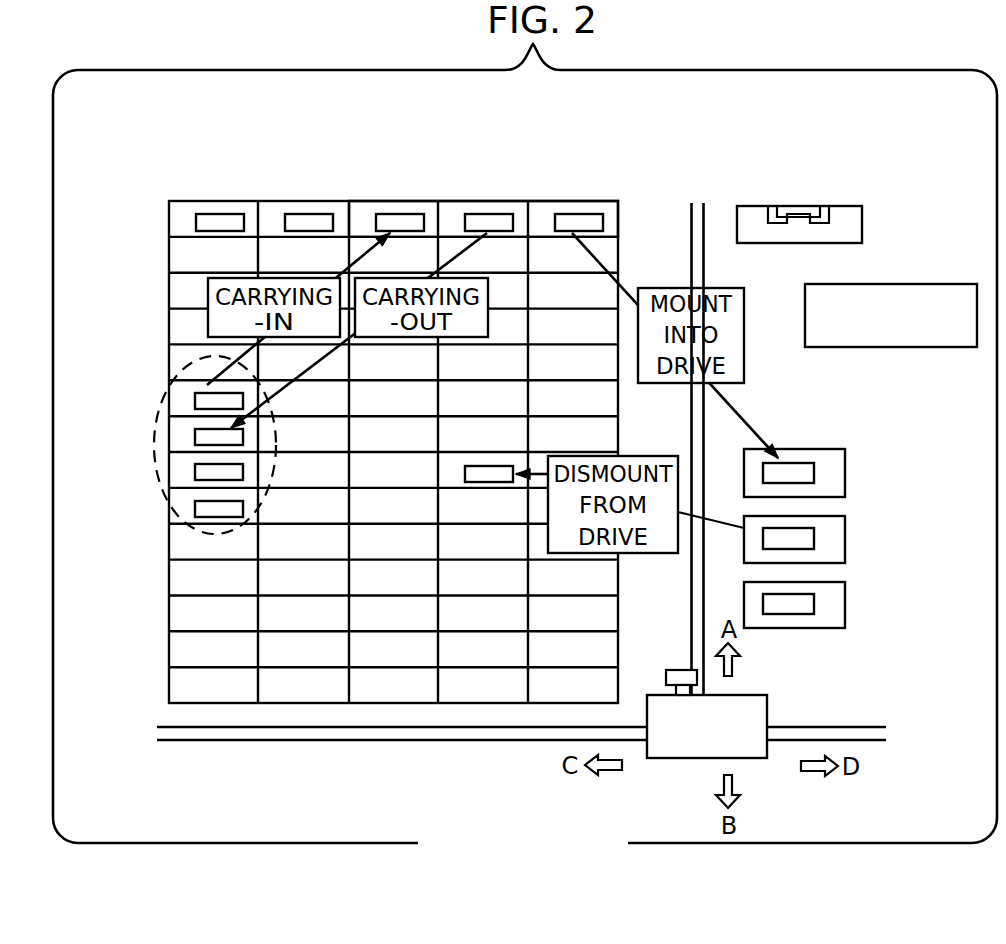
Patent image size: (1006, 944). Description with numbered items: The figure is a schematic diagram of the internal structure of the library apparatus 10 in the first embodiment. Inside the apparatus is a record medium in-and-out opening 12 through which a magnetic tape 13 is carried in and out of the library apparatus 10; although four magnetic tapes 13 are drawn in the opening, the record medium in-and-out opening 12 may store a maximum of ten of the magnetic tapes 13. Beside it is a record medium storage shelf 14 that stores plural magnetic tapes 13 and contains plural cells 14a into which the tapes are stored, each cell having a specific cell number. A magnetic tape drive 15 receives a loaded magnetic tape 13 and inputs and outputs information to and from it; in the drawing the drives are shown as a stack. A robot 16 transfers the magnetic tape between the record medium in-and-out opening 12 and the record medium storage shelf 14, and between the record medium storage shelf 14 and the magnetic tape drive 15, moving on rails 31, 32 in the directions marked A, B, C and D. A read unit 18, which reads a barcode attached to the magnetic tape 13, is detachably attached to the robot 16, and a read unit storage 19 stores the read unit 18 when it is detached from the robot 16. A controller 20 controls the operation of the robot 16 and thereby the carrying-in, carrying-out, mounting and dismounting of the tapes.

The library apparatus 10 is at (652, 165).
The record medium in-and-out opening 12 is at (162, 402).
The magnetic tape 13 is at (377, 213).
The record medium storage shelf 14 is at (405, 200).
The cell 14a is at (608, 212).
The magnetic tape drive 15 is at (850, 443).
The robot 16 is at (767, 707).
The read unit 18 is at (800, 209).
The read unit storage 19 is at (862, 222).
The controller 20 is at (910, 284).
The rail 31 is at (690, 597).
The rail 32 is at (855, 727).